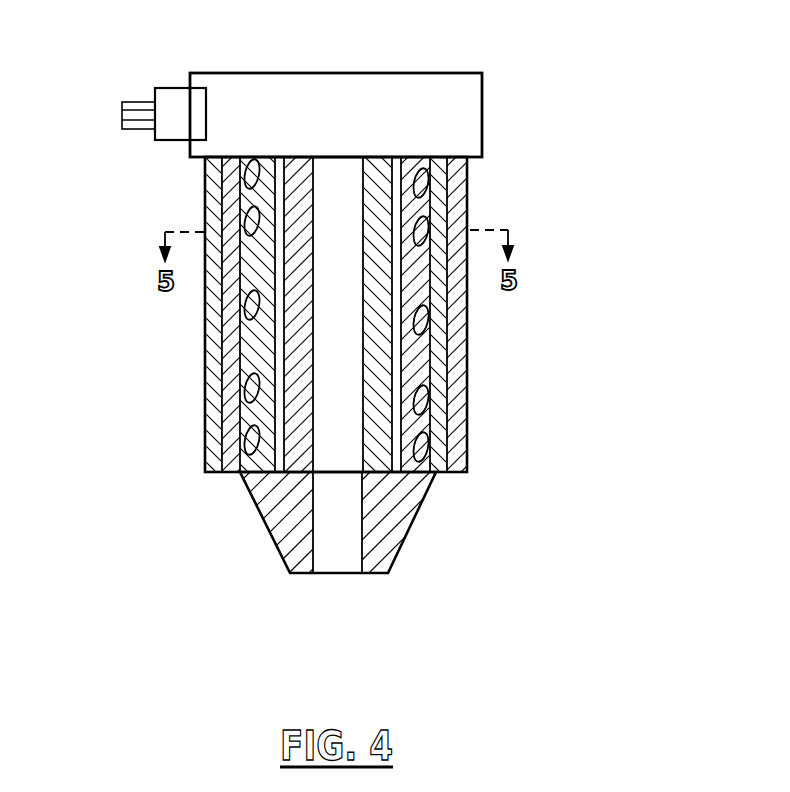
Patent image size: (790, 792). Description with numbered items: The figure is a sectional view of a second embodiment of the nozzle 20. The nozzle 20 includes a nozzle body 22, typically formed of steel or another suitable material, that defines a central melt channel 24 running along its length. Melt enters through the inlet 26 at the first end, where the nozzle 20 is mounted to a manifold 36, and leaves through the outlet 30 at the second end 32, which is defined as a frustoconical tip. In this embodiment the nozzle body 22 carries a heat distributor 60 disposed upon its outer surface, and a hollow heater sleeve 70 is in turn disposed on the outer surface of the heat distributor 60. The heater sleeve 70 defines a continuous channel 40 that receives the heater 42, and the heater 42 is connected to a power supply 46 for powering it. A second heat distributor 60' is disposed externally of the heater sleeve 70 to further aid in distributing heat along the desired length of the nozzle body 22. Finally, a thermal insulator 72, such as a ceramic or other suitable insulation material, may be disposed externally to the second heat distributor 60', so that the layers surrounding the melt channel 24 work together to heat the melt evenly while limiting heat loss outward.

The nozzle 20 is at (584, 112).
The nozzle body 22 is at (302, 362).
The melt channel 24 is at (337, 313).
The inlet 26 is at (333, 158).
The outlet 30 is at (342, 553).
The second end 32 is at (270, 508).
The manifold 36 is at (462, 100).
The continuous channel 40 is at (447, 189).
The heater 42 is at (450, 223).
The power supply 46 is at (122, 113).
The heat distributor 60 is at (390, 307).
The second heat distributor 60' is at (486, 315).
The heater sleeve 70 is at (428, 290).
The thermal insulator 72 is at (455, 459).